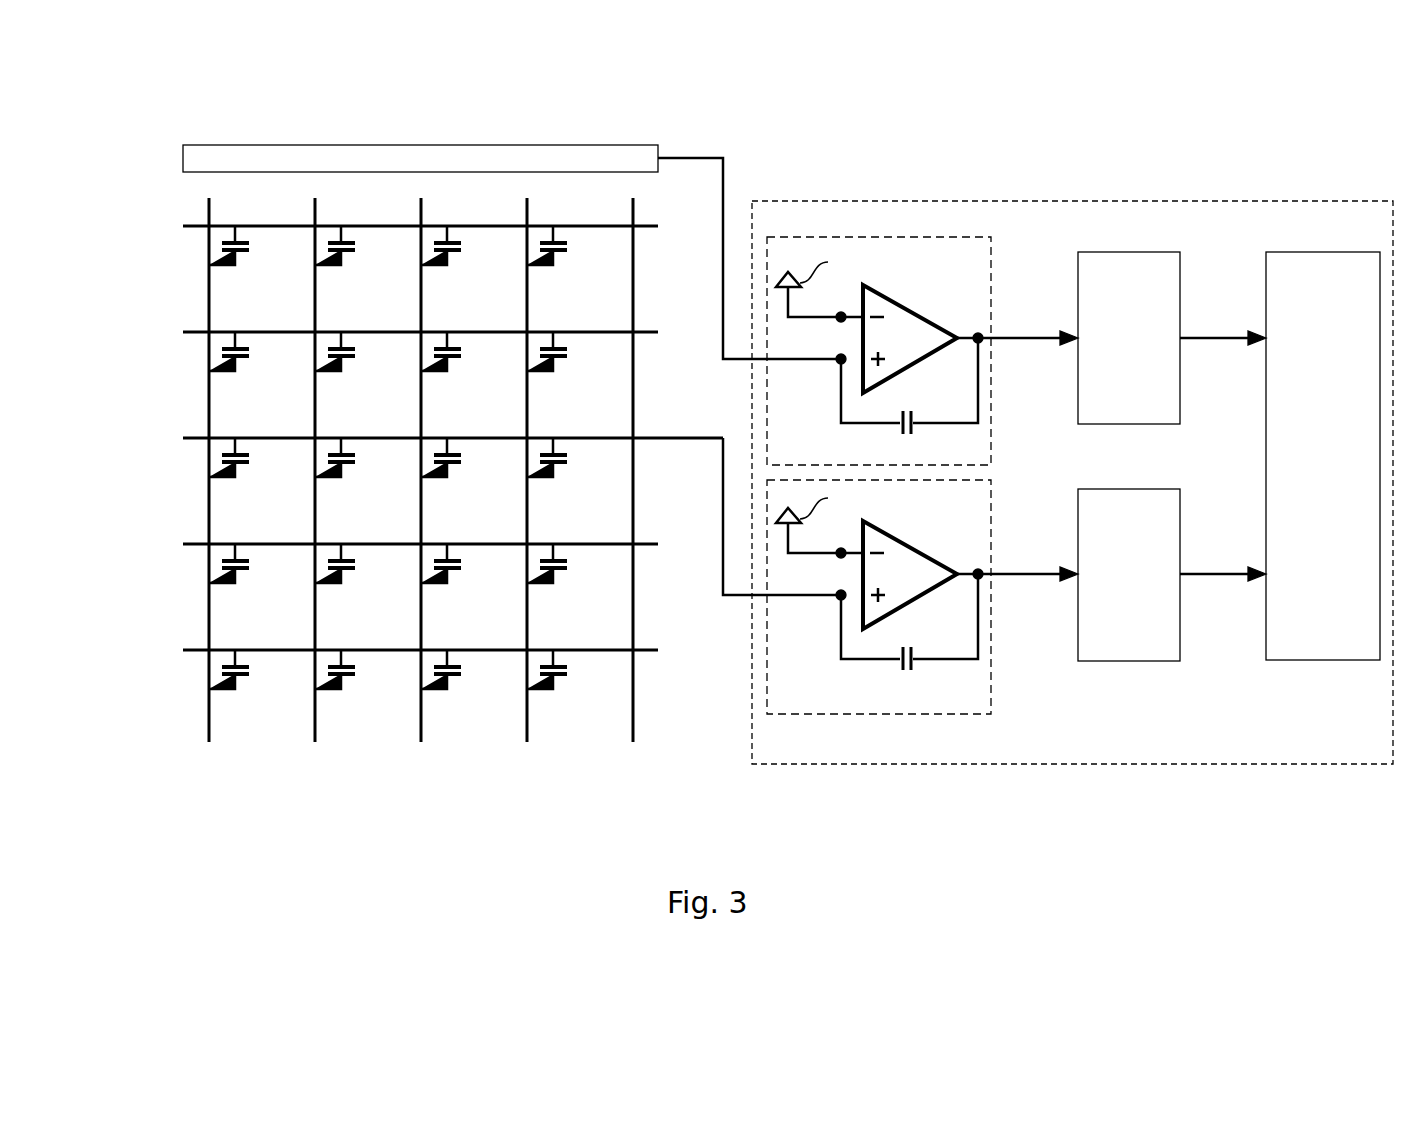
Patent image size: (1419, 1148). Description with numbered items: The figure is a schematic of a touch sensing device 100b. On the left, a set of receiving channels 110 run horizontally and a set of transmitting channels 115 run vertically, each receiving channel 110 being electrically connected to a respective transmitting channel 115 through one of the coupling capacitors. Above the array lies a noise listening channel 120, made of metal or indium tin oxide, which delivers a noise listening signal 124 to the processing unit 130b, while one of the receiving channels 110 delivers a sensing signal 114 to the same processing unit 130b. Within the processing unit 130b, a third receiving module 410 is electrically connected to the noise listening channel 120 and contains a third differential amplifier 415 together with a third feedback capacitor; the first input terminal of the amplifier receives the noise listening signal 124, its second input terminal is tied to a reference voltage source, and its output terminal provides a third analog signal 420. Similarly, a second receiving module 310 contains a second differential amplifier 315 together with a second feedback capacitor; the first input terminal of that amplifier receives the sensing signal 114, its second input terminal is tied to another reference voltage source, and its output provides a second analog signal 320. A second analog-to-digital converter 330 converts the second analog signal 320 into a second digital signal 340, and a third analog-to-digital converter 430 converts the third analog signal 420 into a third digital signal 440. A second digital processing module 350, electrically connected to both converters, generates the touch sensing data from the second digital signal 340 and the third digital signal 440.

The touch sensing device 100b is at (1070, 113).
The receiving channels 110 is at (197, 226).
The transmitting channels 115 is at (209, 722).
The noise listening channel 120 is at (565, 145).
The noise listening signal 124 is at (680, 158).
The sensing signal 114 is at (710, 438).
The processing unit 130b is at (1172, 201).
The third receiving module 410 is at (930, 237).
The third differential amplifier 415 is at (893, 297).
The third analog signal 420 is at (1003, 338).
The third analog-to-digital converter 430 is at (1112, 403).
The third digital signal 440 is at (1195, 338).
The second receiving module 310 is at (930, 714).
The second differential amplifier 315 is at (893, 533).
The second analog signal 320 is at (1003, 574).
The second analog-to-digital converter 330 is at (1112, 640).
The second digital signal 340 is at (1195, 574).
The second digital processing module 350 is at (1306, 521).